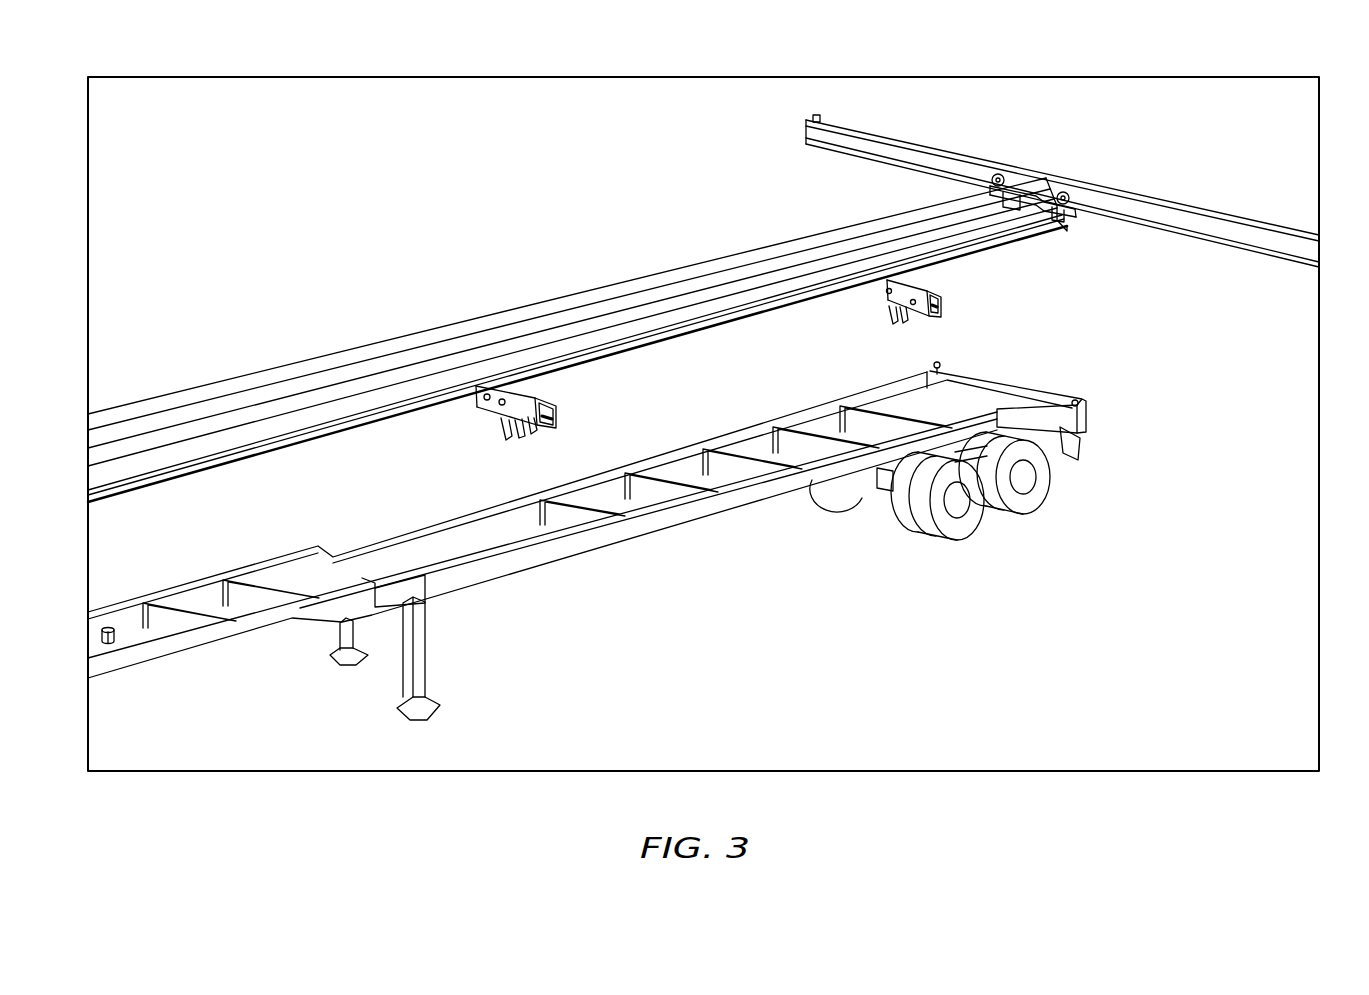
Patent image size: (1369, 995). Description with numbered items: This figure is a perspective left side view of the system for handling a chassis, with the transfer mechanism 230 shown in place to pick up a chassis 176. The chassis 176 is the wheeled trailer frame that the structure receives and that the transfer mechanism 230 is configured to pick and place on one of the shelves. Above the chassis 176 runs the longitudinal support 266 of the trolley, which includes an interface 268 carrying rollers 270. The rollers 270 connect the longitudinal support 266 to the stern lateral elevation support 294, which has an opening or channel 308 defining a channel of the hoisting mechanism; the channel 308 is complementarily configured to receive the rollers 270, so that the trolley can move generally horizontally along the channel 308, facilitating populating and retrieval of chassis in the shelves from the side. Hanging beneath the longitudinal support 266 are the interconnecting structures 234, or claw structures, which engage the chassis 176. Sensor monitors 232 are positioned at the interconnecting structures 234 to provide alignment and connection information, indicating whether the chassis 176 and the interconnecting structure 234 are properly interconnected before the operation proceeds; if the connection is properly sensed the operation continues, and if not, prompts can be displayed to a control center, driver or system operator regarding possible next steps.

The chassis 176 is at (1008, 382).
The transfer mechanism 230 is at (815, 90).
The sensor monitors 232 is at (503, 390).
The interconnecting structure 234 is at (558, 417).
The longitudinal support 266 is at (708, 272).
The interface 268 is at (1022, 190).
The rollers 270 is at (1071, 186).
The stern lateral elevation support 294 is at (870, 148).
The channel 308 is at (930, 158).